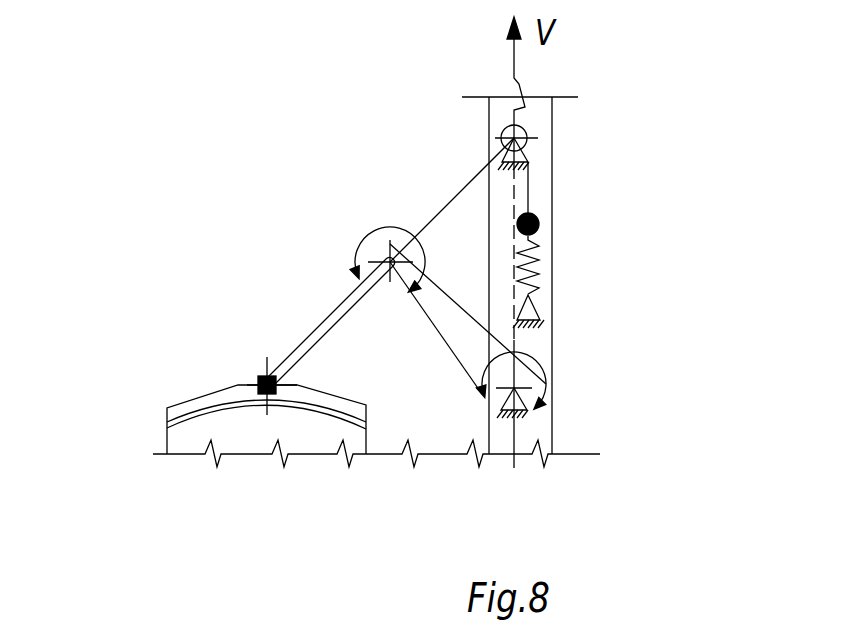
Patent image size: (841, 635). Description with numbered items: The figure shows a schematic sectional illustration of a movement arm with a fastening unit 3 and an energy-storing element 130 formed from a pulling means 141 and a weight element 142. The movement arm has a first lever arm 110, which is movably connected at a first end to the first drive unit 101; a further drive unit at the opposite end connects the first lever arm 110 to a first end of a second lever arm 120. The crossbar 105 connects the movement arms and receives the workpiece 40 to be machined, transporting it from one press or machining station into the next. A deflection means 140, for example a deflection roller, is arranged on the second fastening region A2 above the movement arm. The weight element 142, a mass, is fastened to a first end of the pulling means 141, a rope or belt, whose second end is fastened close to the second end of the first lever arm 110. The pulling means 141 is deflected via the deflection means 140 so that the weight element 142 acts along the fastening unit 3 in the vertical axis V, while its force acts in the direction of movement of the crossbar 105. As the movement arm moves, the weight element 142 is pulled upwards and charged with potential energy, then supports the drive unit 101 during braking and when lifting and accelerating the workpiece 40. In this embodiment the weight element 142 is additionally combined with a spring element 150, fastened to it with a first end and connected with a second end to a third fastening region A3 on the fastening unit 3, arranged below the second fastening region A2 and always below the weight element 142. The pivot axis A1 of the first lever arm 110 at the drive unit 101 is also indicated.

The fastening unit 3 is at (541, 197).
The workpiece 40 is at (170, 416).
The crossbar 105 is at (258, 378).
The second lever arm 120 is at (332, 318).
The energy-storing element 130 is at (450, 204).
The pulling means 141 is at (437, 215).
The first lever arm 110 is at (485, 347).
The deflection means 140 is at (503, 130).
The second fastening region A2 is at (522, 143).
The weight element 142 is at (517, 217).
The spring element 150 is at (537, 258).
The third fastening region A3 is at (538, 312).
The first drive unit 101 is at (541, 368).
The first pivot axis A1 is at (540, 410).